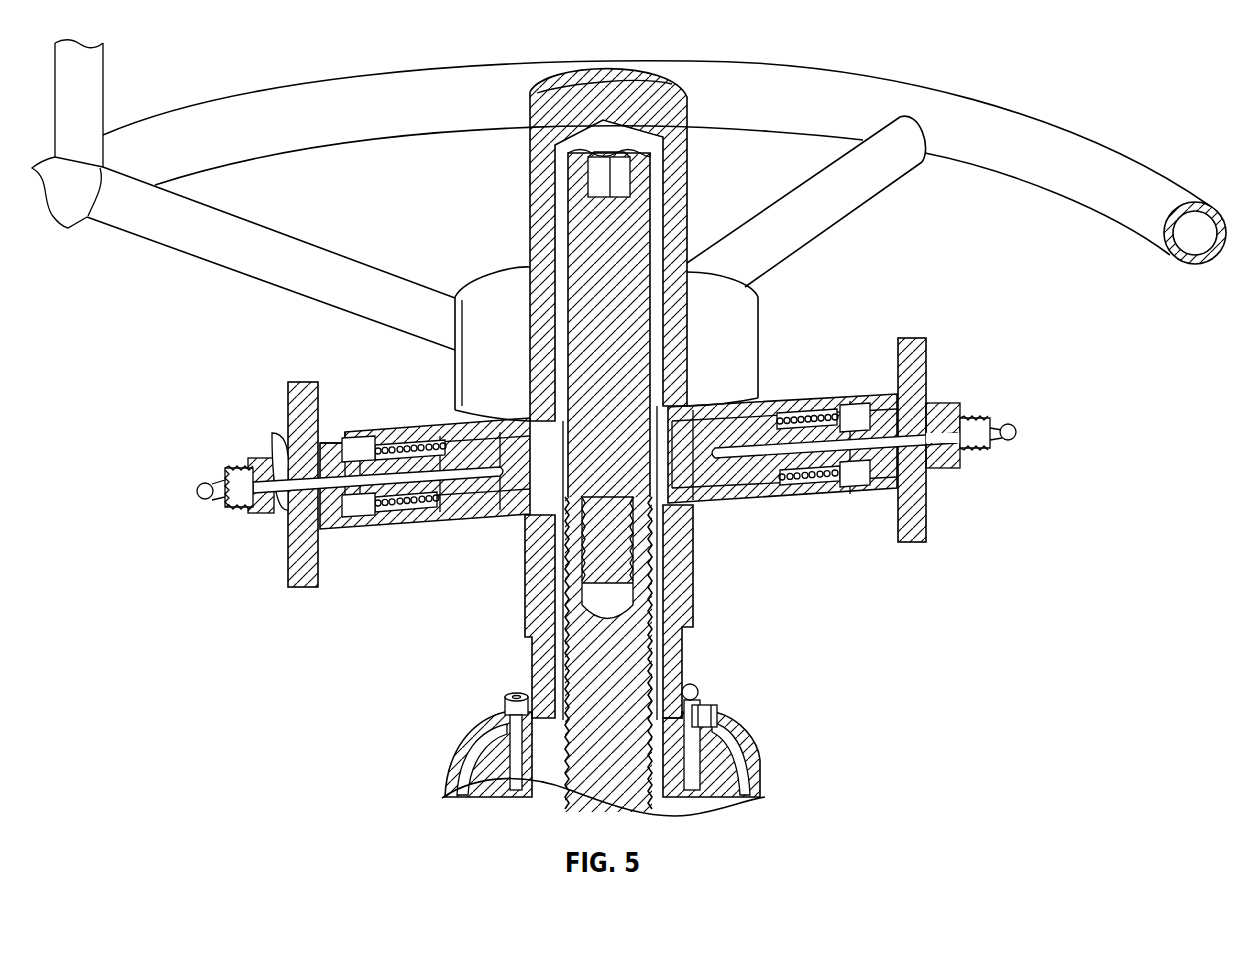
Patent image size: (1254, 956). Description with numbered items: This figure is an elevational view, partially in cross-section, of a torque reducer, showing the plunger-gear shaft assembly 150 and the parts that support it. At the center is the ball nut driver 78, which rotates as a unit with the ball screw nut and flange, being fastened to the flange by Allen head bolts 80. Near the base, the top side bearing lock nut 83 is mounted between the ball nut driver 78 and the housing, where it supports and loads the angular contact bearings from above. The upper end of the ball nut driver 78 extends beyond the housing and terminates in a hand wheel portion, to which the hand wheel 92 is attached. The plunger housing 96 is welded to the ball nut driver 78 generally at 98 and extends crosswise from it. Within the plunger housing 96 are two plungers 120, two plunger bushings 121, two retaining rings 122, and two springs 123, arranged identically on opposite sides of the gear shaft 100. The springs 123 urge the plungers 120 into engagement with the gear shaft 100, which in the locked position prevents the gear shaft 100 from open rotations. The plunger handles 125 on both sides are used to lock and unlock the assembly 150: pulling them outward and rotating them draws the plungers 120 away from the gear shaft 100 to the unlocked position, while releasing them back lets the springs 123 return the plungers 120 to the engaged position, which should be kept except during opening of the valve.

The ball nut driver 78 is at (680, 578).
The Allen head bolts 80 is at (707, 713).
The top side bearing lock nut 83 is at (733, 748).
The hand wheel 92 is at (985, 150).
The plunger housing 96 is at (398, 428).
The weld location 98 is at (677, 510).
The gear shaft 100 is at (590, 232).
The plungers 120 is at (477, 503).
The plunger bushings 121 is at (300, 518).
The retaining rings 122 is at (363, 512).
The springs 123 is at (410, 507).
The plunger handles 125 is at (290, 567).
The plunger-gear shaft assembly 150 is at (140, 358).